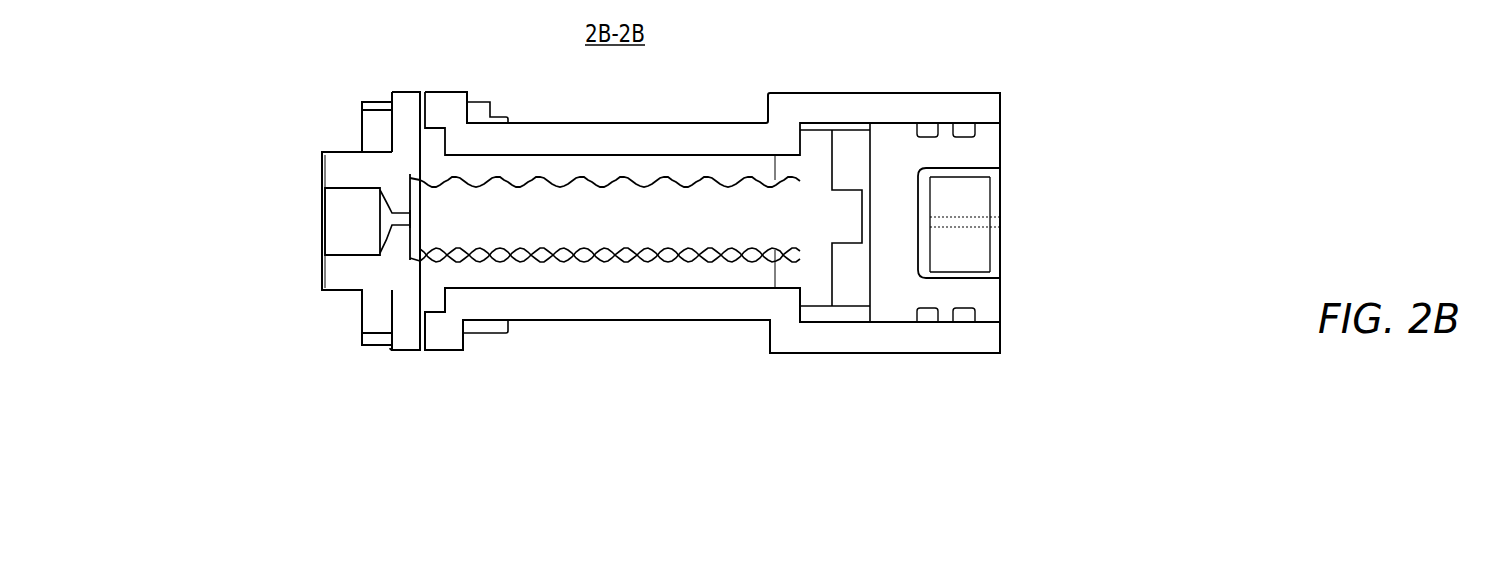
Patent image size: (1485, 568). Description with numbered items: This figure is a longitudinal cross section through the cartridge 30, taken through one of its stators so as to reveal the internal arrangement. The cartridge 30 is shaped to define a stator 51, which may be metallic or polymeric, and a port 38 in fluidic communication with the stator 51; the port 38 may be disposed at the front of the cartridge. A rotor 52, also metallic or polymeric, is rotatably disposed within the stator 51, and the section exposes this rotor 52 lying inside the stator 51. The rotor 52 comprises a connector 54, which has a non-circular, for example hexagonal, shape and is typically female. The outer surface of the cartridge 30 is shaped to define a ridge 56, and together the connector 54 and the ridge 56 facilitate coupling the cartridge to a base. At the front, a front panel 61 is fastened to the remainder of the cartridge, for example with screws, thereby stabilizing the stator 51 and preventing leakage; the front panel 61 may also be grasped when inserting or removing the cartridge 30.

The cartridge 30 is at (1012, 78).
The port 38 is at (330, 218).
The stator 51 is at (548, 258).
The rotor 52 is at (615, 231).
The connector 54 is at (975, 253).
The ridge 56 is at (768, 98).
The front panel 61 is at (405, 92).